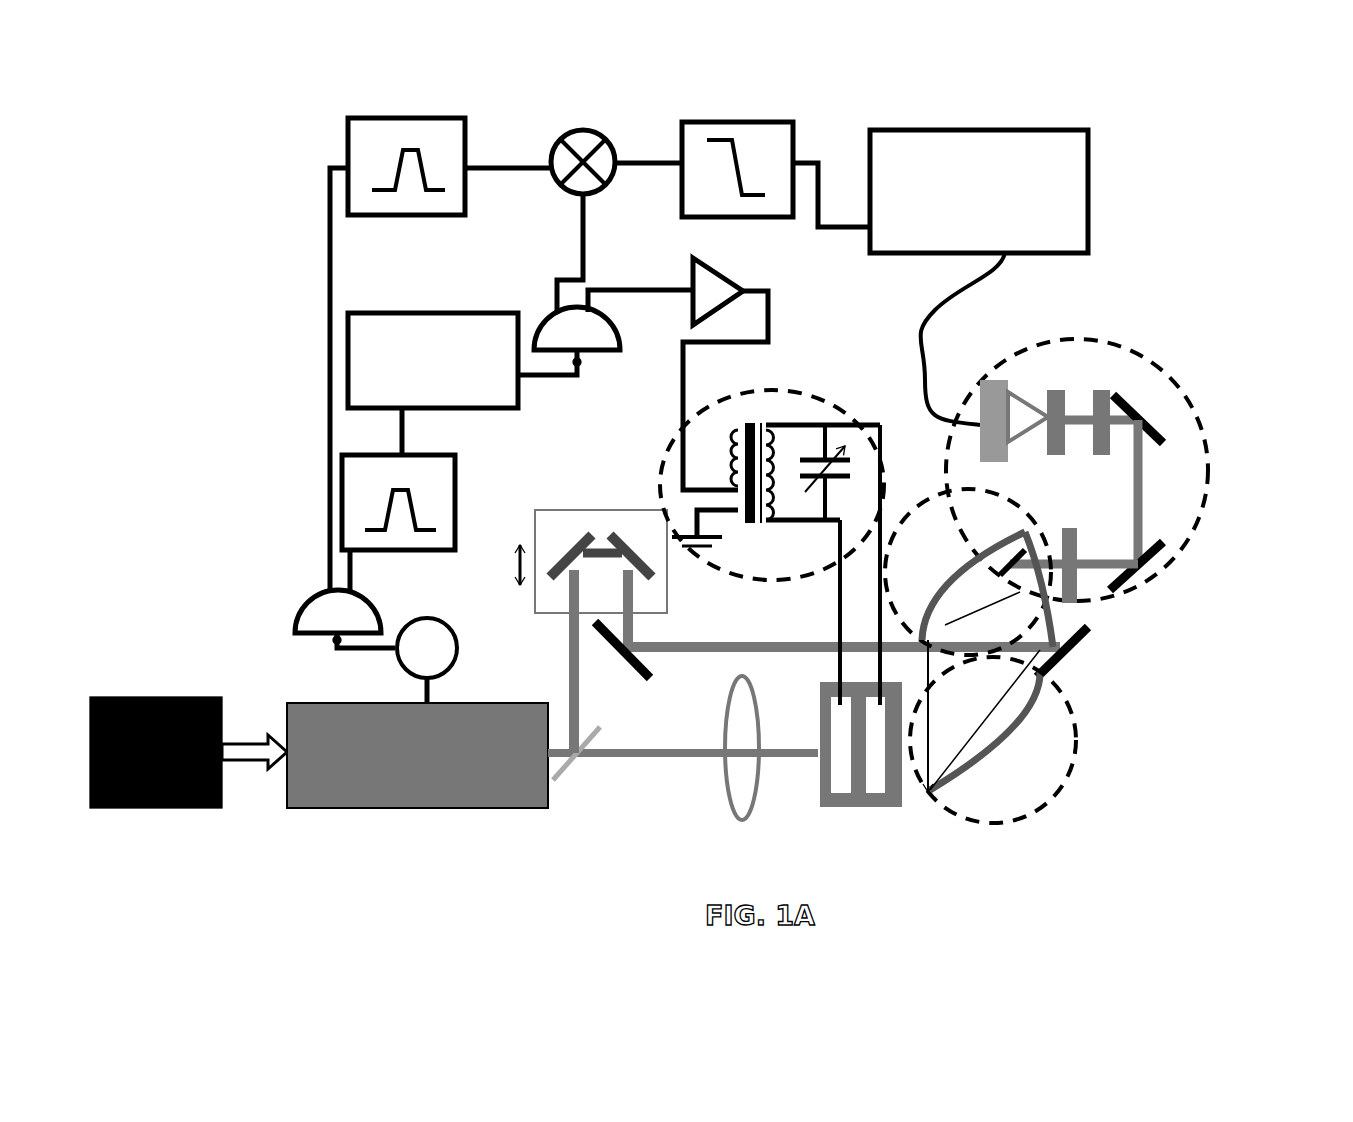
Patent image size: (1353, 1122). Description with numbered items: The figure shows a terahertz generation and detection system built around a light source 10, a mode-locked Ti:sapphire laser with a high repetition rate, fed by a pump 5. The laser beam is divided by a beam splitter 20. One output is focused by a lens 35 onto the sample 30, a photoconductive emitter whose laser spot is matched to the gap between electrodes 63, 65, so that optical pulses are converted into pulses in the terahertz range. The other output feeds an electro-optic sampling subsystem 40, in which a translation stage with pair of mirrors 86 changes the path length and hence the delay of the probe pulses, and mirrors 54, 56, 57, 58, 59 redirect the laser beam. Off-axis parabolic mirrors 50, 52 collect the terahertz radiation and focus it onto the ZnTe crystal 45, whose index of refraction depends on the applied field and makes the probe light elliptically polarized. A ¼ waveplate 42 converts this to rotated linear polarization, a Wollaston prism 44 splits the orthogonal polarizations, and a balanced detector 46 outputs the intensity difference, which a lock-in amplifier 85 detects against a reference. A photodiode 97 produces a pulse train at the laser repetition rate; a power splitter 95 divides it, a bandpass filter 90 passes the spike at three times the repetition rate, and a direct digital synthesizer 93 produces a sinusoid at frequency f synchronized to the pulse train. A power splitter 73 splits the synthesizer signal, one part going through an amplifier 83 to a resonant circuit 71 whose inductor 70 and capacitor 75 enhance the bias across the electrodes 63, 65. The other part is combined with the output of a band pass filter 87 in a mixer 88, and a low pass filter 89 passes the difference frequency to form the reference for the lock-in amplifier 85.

The pump 5 is at (158, 697).
The light source 10 is at (407, 813).
The beam splitter 20 is at (575, 764).
The sample 30 is at (820, 770).
The lens 35 is at (725, 790).
The electro-optic sampling subsystem 40 is at (1182, 380).
The ¼ waveplate 42 is at (1108, 392).
The Wollaston prism 44 is at (1050, 390).
The ZnTe (110) crystal 45 is at (1150, 560).
The balanced detector 46 is at (925, 345).
The off-axis parabolic mirror 50 is at (1065, 745).
The off-axis parabolic mirror 52 is at (1013, 730).
The mirror 54 is at (607, 655).
The mirror 56 is at (1073, 593).
The mirror 57 is at (1150, 423).
The mirror 58 is at (1150, 565).
The mirror 59 is at (1075, 655).
The electrode 63 is at (835, 705).
The electrode 65 is at (880, 705).
The inductor 70 is at (760, 547).
The resonant (LC) circuit 71 is at (693, 417).
The power splitter 73 is at (307, 597).
The capacitor 75 is at (800, 425).
The amplifier 83 is at (713, 275).
The lock-in amplifier 85 is at (1088, 150).
The translation stage with pair of mirrors 86 is at (538, 532).
The band pass filter 87 is at (343, 133).
The mixer 88 is at (562, 104).
The low pass filter 89 is at (690, 122).
The bandpass filter 90 is at (337, 462).
The direct digital synthesizer 93 is at (342, 345).
The power splitter 95 is at (547, 312).
The photodiode 97 is at (462, 660).